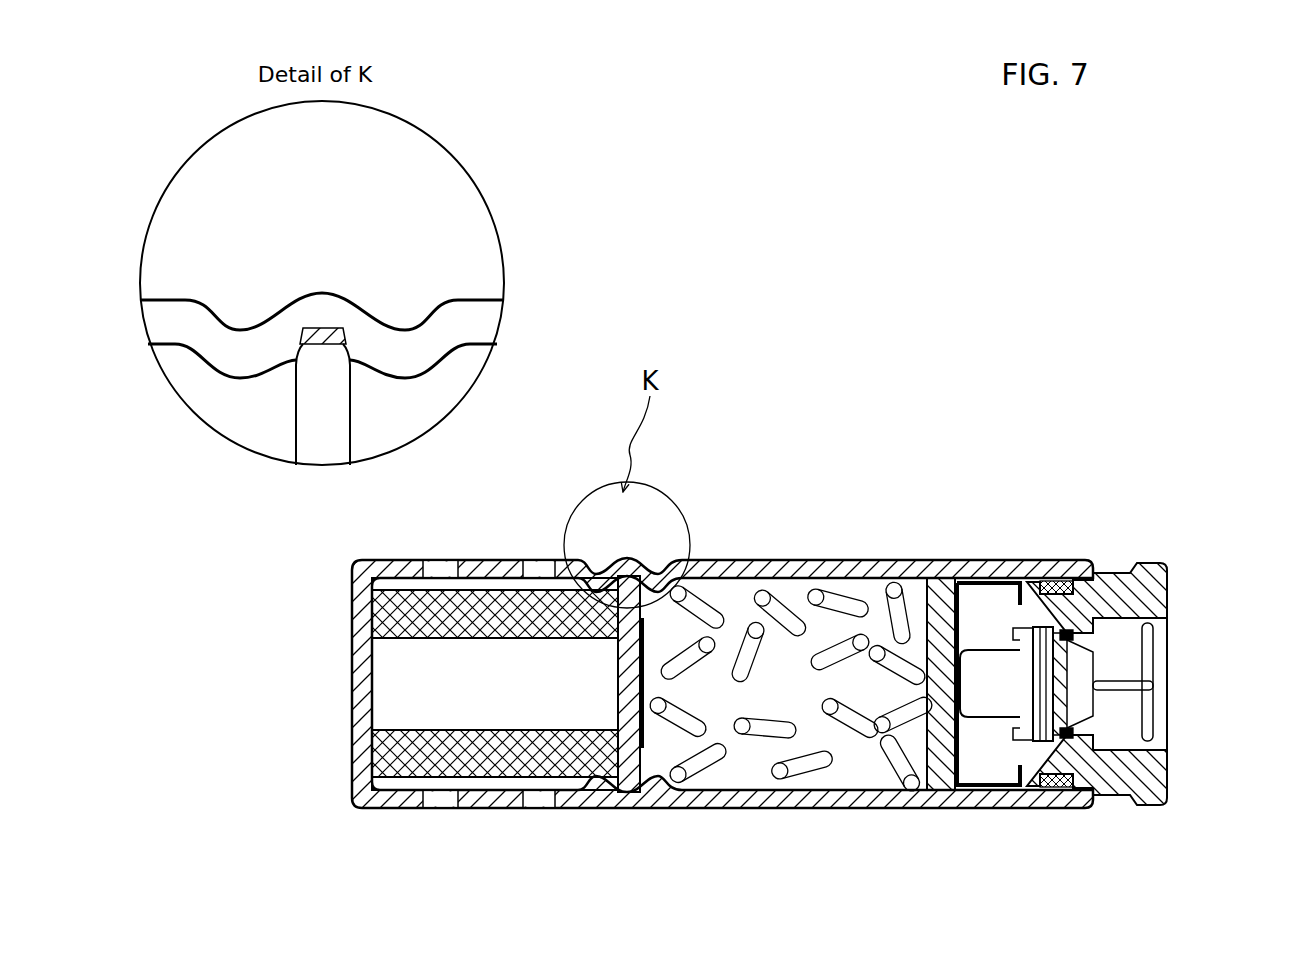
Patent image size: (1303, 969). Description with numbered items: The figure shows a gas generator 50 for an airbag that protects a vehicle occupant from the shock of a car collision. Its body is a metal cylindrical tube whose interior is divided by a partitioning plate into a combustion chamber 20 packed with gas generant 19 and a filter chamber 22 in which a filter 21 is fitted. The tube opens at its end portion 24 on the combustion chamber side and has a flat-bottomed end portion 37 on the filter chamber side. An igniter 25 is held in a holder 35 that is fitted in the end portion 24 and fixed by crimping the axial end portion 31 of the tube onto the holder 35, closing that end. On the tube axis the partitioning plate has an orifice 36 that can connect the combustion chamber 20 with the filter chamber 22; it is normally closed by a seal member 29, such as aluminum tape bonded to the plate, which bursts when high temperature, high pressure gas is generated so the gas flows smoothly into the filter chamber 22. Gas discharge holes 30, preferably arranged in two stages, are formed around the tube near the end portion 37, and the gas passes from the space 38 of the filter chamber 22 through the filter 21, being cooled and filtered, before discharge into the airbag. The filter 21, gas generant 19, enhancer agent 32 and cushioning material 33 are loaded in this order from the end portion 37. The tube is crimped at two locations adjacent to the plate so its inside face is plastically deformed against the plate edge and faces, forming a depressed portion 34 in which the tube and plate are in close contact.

The gas generant 19 is at (702, 598).
The combustion chamber 20 is at (740, 598).
The filter 21 is at (503, 598).
The filter chamber 22 is at (400, 580).
The end portion on combustion chamber side 24 is at (1168, 567).
The igniter device 25 is at (1007, 705).
The seal member 29 is at (647, 722).
The gas discharge holes 30 is at (447, 575).
The axial end portion 31 is at (1103, 567).
The enhancer agent 32 is at (880, 608).
The cushioning material 33 is at (942, 608).
The depressed portion 34 is at (312, 352).
The holder 35 is at (1175, 782).
The orifice 36 is at (628, 712).
The end portion on filter chamber side 37 is at (352, 576).
The space of filter chamber 38 is at (383, 695).
The gas generator 50 is at (1103, 300).